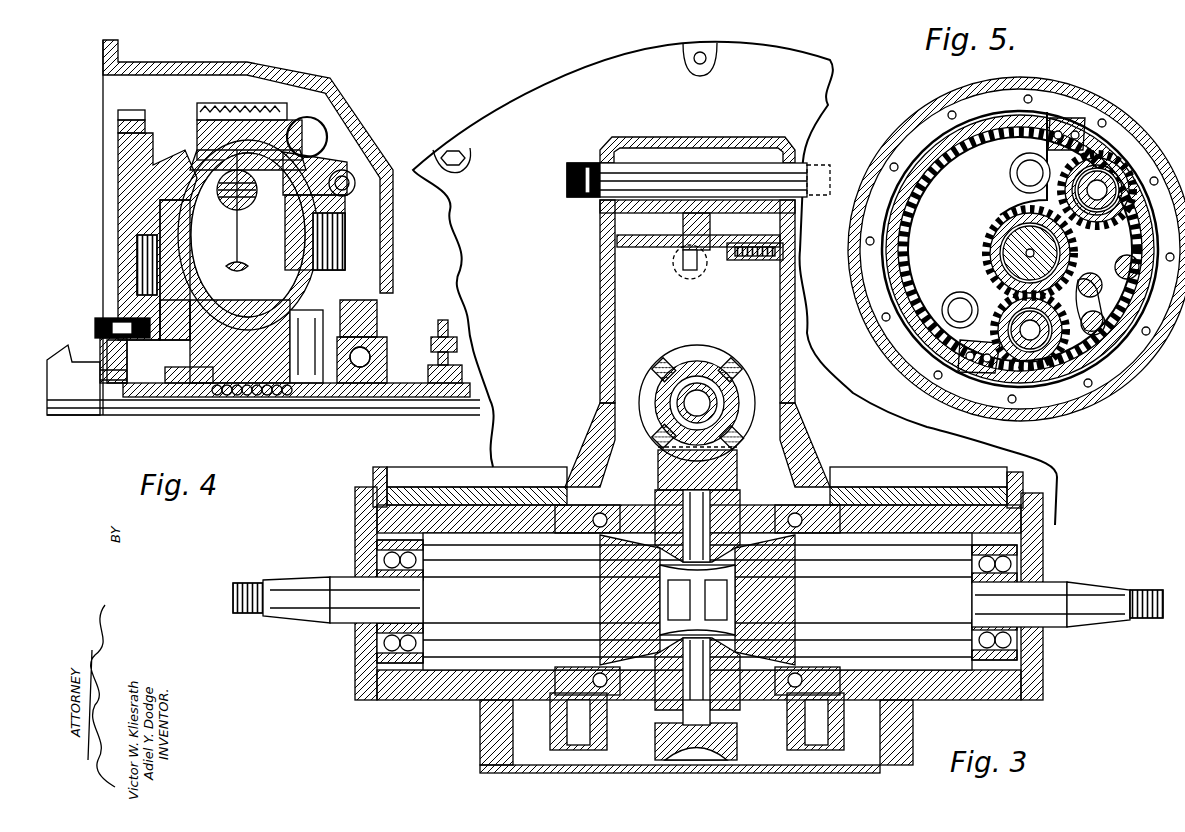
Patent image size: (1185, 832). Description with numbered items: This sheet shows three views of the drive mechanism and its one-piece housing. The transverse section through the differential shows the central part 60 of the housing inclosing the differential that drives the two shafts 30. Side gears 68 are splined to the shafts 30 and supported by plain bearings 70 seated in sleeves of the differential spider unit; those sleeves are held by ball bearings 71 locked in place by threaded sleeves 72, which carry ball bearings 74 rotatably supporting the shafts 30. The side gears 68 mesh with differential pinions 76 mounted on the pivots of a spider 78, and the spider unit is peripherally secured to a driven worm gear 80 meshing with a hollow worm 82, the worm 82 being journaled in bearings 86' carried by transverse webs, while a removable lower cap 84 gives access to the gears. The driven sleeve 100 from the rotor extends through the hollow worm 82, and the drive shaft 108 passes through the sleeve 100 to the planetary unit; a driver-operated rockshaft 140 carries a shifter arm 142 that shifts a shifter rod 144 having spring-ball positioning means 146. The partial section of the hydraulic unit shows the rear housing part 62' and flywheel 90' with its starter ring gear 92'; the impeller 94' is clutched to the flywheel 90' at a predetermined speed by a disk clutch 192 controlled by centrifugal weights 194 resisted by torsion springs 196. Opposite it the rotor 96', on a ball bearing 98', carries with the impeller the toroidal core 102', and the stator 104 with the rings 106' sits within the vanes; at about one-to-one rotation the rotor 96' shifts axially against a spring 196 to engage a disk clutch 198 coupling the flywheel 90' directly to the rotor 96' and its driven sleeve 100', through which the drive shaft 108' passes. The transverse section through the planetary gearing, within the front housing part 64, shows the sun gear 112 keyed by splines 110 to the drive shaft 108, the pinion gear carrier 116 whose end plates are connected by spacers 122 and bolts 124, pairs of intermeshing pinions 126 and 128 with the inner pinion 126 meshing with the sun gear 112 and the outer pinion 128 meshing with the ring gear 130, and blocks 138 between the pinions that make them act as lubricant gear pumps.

In FIG. 3, the shafts 30 is at (345, 615).
In FIG. 3, the central part of housing 60 is at (893, 490).
In FIG. 4, the rear part of housing 62' is at (248, 160).
In FIG. 5, the front part of housing 64 is at (1175, 222).
In FIG. 3, the side gears 68 is at (660, 510).
In FIG. 3, the plain bearings 70 is at (552, 625).
In FIG. 3, the ball bearings 71 is at (800, 470).
In FIG. 3, the threaded sleeves 72 is at (357, 522).
In FIG. 3, the ball bearings 74 is at (355, 650).
In FIG. 3, the differential pinions 76 is at (745, 495).
In FIG. 3, the spider 78 is at (678, 482).
In FIG. 3, the driven worm gear 80 is at (672, 755).
In FIG. 3, the hollow worm 82 is at (710, 364).
In FIG. 3, the removable lower cap 84 is at (798, 771).
In FIG. 4, the bearings 86' is at (420, 338).
In FIG. 4, the flywheel 90' is at (131, 236).
In FIG. 4, the starter ring gear 92' is at (105, 101).
In FIG. 4, the impeller 94' is at (344, 146).
In FIG. 4, the rotor 96' is at (227, 136).
In FIG. 4, the ball bearing 98' is at (181, 406).
In FIG. 3, the driven sleeve 100 is at (697, 389).
In FIG. 4, the driven sleeve 100' is at (296, 415).
In FIG. 4, the toroidal core 102' is at (250, 206).
In FIG. 4, the stator 104 is at (242, 317).
In FIG. 4, the rings 106' is at (246, 285).
In FIG. 3, the drive shaft 108 is at (763, 378).
In FIG. 5, the drive shaft 108 is at (1013, 247).
In FIG. 4, the drive shaft 108' is at (263, 396).
In FIG. 5, the splines 110 is at (1002, 256).
In FIG. 5, the sun gear 112 is at (1067, 245).
In FIG. 5, the pinion gear carrier 116 is at (1125, 315).
In FIG. 5, the spacers 122 is at (1099, 298).
In FIG. 5, the bolts 124 is at (1124, 266).
In FIG. 5, the inner planetary pinions 126 is at (1028, 156).
In FIG. 5, the outer planetary pinions 128 is at (1131, 190).
In FIG. 5, the ring gear 130 is at (1107, 180).
In FIG. 5, the blocks 138 is at (1050, 135).
In FIG. 3, the rockshaft 140 is at (790, 180).
In FIG. 3, the shifter arm 142 is at (712, 228).
In FIG. 3, the shifter rod 144 is at (685, 268).
In FIG. 3, the positioning means 146 is at (740, 258).
In FIG. 4, the disk clutch 192 is at (345, 258).
In FIG. 4, the centrifugal weights 194 is at (308, 135).
In FIG. 4, the springs 196 is at (352, 173).
In FIG. 4, the disk clutch 198 is at (120, 262).